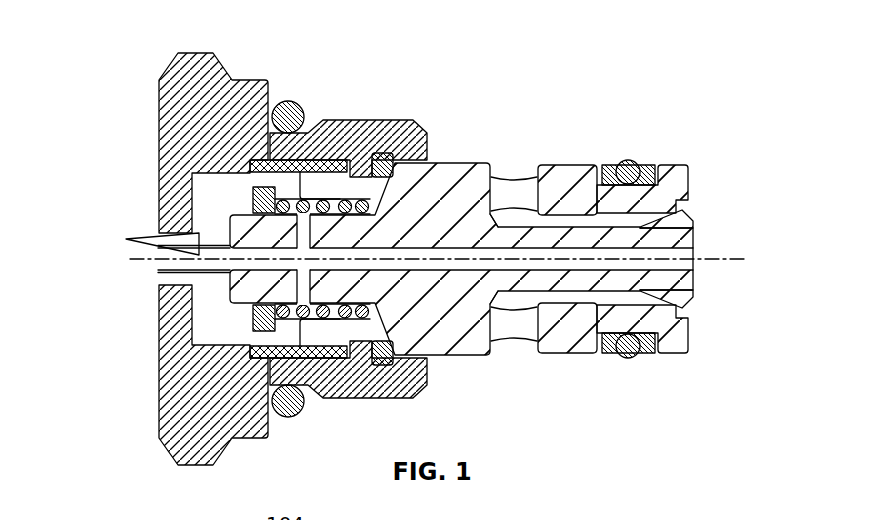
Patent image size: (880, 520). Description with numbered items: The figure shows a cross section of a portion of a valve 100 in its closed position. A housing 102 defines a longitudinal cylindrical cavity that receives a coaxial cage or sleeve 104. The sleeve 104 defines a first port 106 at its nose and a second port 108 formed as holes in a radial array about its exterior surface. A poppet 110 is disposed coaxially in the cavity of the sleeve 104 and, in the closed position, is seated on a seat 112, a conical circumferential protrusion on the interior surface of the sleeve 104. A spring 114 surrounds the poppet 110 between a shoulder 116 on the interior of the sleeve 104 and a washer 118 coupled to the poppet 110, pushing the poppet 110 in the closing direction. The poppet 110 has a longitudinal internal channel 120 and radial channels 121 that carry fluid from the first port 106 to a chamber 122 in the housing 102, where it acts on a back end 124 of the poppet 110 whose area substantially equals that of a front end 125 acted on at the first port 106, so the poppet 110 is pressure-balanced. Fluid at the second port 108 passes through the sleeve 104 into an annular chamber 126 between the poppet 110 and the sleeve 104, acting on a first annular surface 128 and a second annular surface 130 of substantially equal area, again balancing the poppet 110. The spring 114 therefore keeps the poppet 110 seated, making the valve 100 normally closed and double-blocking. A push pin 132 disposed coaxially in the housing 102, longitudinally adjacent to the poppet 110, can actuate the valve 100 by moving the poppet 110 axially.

The valve 100 is at (126, 79).
The housing 102 is at (203, 72).
The sleeve 104 is at (445, 192).
The first port 106 is at (713, 254).
The second port 108 is at (509, 170).
The poppet 110 is at (587, 278).
The seat 112 is at (667, 203).
The spring 114 is at (330, 192).
The shoulder 116 is at (376, 191).
The washer 118 is at (300, 105).
The longitudinal internal channel 120 is at (651, 263).
The radial channels 121 is at (308, 292).
The chamber 122 is at (209, 190).
The back end 124 is at (224, 294).
The front end 125 is at (698, 219).
The annular chamber 126 is at (569, 203).
The first annular surface 128 is at (501, 222).
The second annular surface 130 is at (654, 221).
The push pin 132 is at (158, 231).